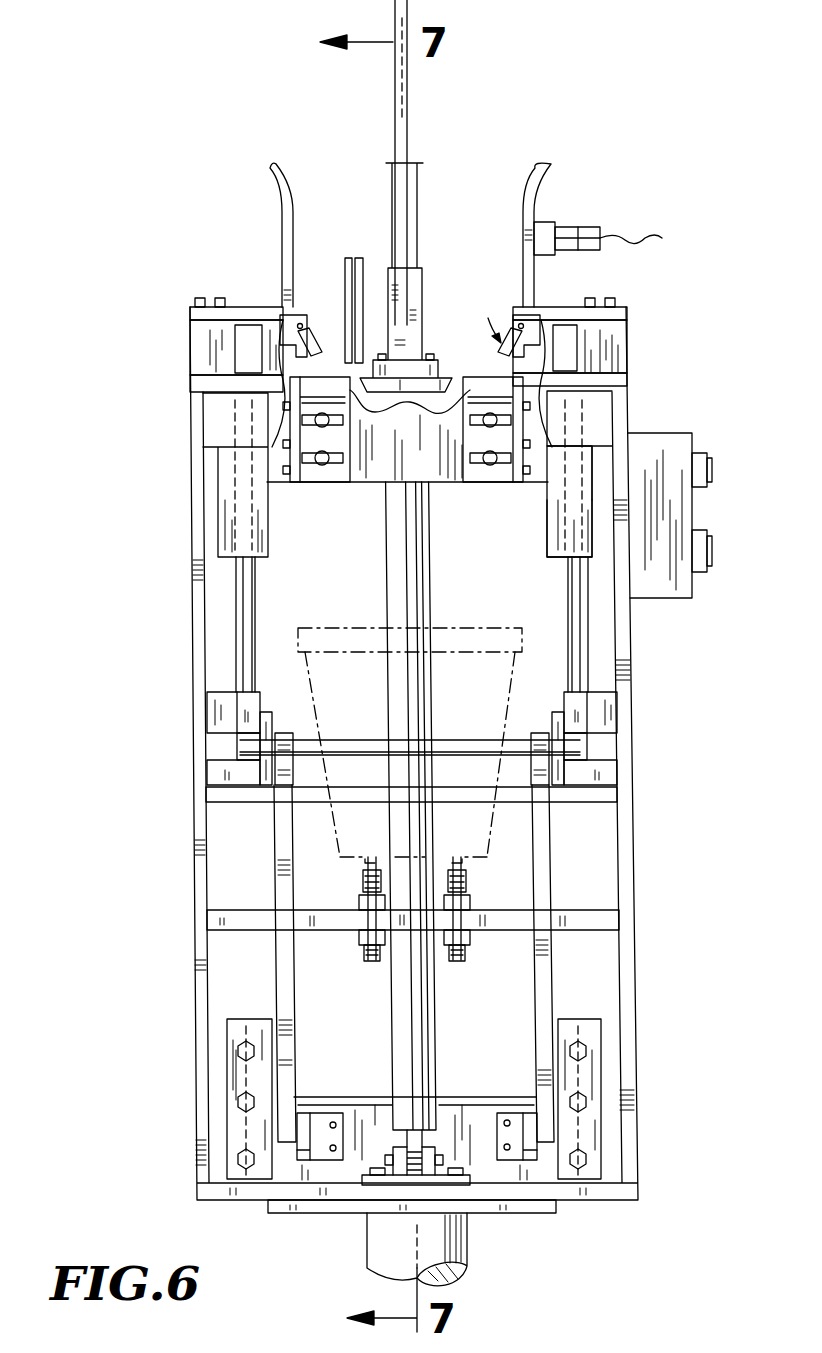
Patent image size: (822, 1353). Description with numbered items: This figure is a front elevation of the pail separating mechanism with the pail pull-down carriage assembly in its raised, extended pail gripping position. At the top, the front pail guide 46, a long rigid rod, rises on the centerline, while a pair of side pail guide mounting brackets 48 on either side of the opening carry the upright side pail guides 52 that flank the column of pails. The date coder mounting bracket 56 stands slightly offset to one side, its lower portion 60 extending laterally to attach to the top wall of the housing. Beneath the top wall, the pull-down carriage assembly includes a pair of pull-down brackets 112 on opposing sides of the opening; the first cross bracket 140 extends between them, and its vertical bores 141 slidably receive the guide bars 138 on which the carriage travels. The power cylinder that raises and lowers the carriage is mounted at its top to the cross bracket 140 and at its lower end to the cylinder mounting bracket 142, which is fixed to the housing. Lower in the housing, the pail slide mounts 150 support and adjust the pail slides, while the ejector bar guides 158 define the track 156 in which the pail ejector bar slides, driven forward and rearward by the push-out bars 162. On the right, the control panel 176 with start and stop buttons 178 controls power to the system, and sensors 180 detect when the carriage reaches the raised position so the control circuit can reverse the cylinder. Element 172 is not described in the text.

The front pail guide 46 is at (408, 132).
The side pail guide 52 is at (282, 218).
The date coder mounting bracket 56 is at (350, 258).
The lower portion of the mounting bracket 60 is at (322, 342).
The side pail guide mounting bracket 48 is at (197, 343).
The sensors 180 is at (578, 231).
The control panel 176 is at (670, 445).
The start and stop buttons 178 is at (712, 542).
The pull-down bracket 112 is at (302, 475).
The bores 141 is at (567, 533).
The first cross bracket 140 is at (557, 543).
The guide bars 138 is at (237, 618).
The ejector bar guides 158 is at (237, 743).
The track 156 is at (237, 770).
The pail slide mounts 150 is at (366, 879).
The push-out bars 162 is at (284, 1003).
The side plates 172 is at (587, 1062).
The cylinder mounting bracket 142 is at (430, 1145).